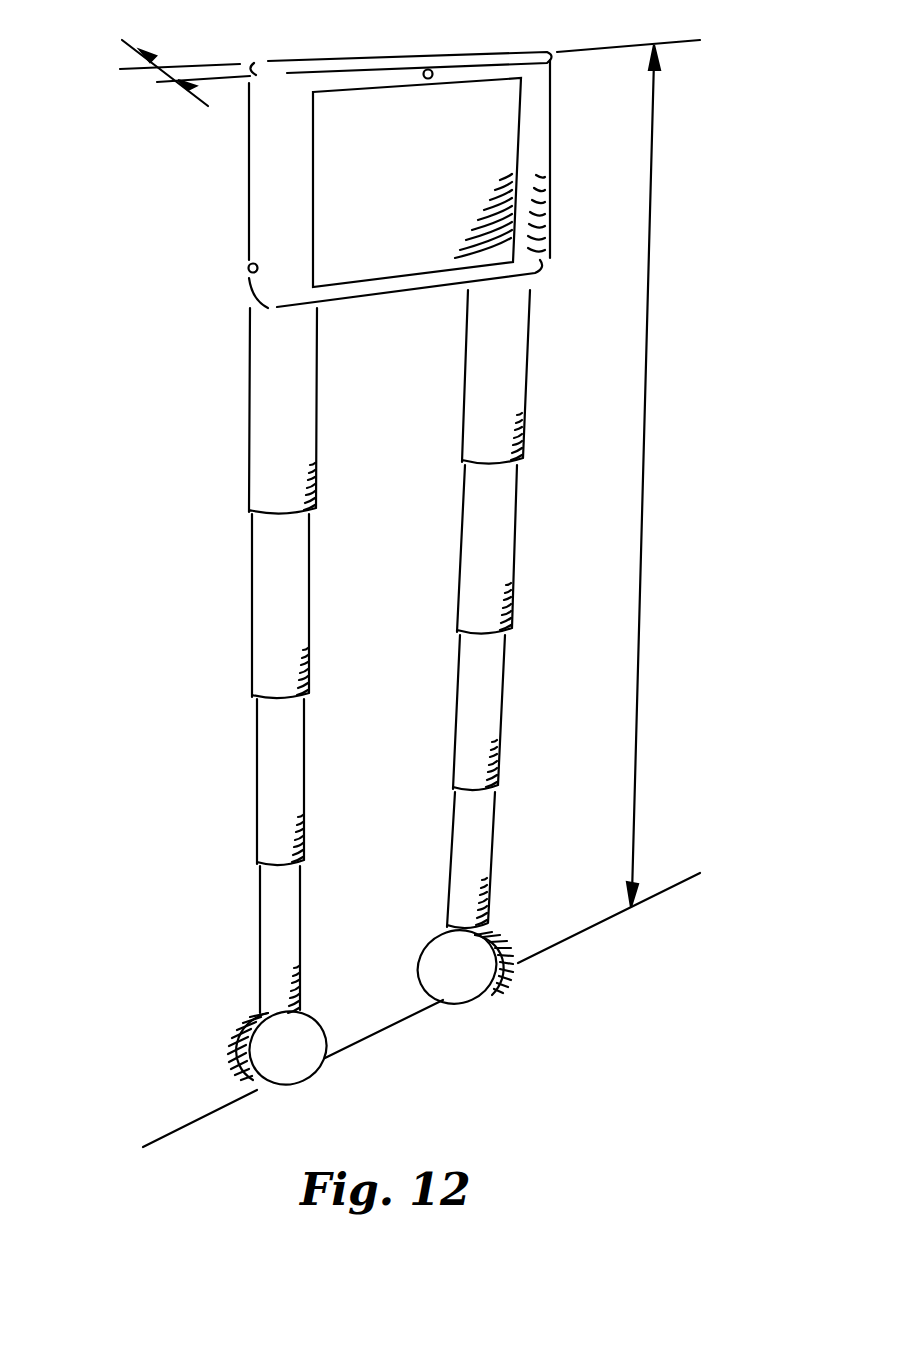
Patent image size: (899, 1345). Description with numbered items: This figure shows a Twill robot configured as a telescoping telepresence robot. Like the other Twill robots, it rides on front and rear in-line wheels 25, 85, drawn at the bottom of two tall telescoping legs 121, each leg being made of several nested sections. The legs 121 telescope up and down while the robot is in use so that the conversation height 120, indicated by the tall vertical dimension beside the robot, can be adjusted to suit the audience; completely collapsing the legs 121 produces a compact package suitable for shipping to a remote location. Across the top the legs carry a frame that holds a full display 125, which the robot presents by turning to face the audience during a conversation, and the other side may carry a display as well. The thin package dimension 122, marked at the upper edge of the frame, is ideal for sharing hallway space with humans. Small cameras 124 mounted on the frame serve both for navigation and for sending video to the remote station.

The conversation height 120 is at (652, 405).
The legs 121 is at (458, 566).
The thin package dimension 122 is at (200, 100).
The cameras 124 is at (248, 269).
The full display 125 is at (446, 229).
The front in-line wheel 25 is at (505, 938).
The rear in-line wheel 85 is at (228, 1046).